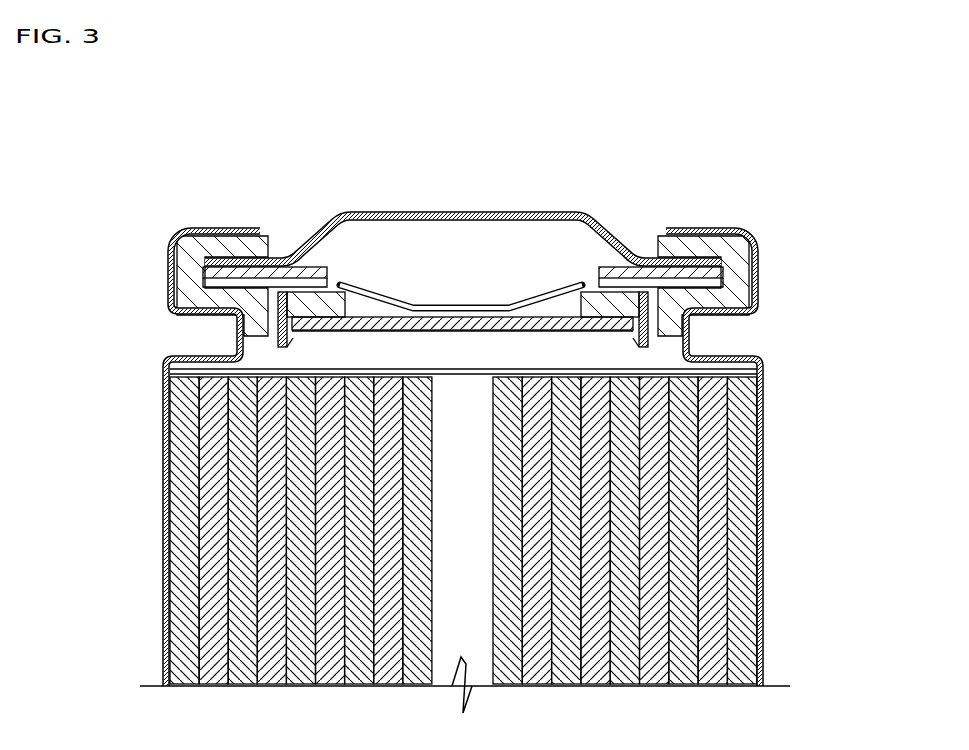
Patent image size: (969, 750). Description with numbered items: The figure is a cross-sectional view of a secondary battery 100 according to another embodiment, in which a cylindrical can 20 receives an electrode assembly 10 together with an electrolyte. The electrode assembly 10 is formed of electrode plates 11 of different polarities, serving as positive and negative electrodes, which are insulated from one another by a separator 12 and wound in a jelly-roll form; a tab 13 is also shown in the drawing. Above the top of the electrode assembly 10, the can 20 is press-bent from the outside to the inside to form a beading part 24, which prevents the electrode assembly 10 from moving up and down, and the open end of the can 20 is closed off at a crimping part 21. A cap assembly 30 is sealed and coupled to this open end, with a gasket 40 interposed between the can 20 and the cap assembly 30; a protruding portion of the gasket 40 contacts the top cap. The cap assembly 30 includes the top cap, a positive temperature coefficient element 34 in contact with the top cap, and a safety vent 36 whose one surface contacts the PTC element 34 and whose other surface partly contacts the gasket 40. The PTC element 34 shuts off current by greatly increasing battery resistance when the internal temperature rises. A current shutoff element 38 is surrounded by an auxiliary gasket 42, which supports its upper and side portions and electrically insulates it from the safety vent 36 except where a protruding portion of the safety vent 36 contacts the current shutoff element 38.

The secondary battery 100 is at (760, 137).
The electrode assembly 10 is at (396, 520).
The electrode plates 11 is at (245, 549).
The separator 12 is at (217, 577).
The electrode tab 13 is at (417, 370).
The can 20 is at (458, 400).
The crimping part 21 is at (178, 229).
The beading part 24 is at (187, 330).
The cap assembly 30 is at (506, 242).
The positive temperature coefficient (PTC) element 34 is at (313, 252).
The safety vent 36 is at (343, 287).
The current shutoff element 38 is at (570, 314).
The gasket 40 is at (752, 278).
The auxiliary gasket 42 is at (292, 338).